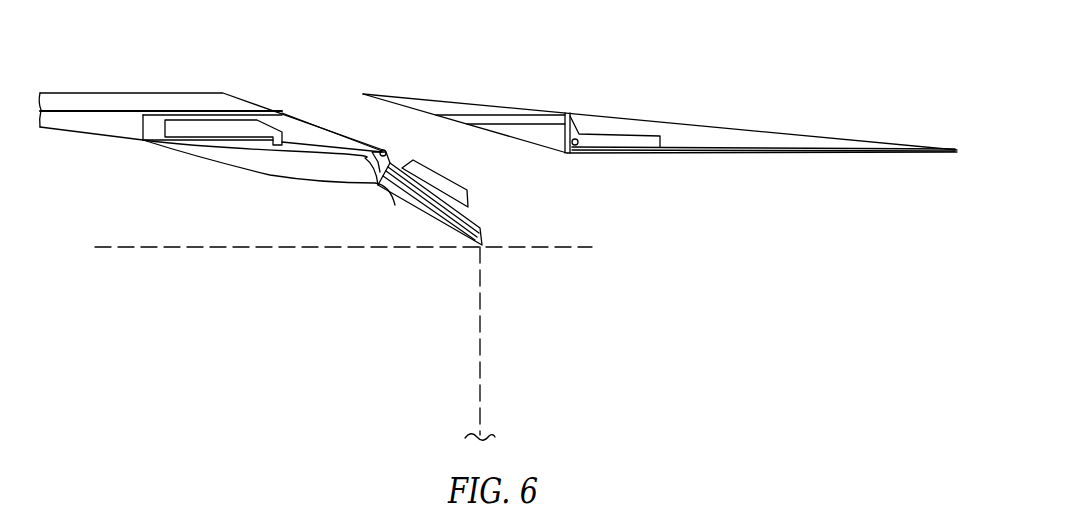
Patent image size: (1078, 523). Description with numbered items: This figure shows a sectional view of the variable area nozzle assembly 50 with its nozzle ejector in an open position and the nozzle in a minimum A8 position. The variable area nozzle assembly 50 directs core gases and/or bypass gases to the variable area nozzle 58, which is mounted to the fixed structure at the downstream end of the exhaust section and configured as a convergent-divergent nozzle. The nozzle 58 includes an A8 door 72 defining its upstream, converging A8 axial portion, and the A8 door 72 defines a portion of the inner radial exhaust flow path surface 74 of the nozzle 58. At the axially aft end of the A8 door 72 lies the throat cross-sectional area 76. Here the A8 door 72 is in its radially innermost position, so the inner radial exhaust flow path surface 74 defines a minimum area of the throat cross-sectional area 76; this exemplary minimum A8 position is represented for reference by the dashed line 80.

The variable area nozzle assembly 50 is at (753, 77).
The variable area nozzle 58 is at (725, 253).
The A8 door 72 is at (395, 205).
The inner radial exhaust flow path surface 74 is at (437, 217).
The throat cross-sectional area 76 is at (480, 387).
The dashed line 80 is at (572, 247).